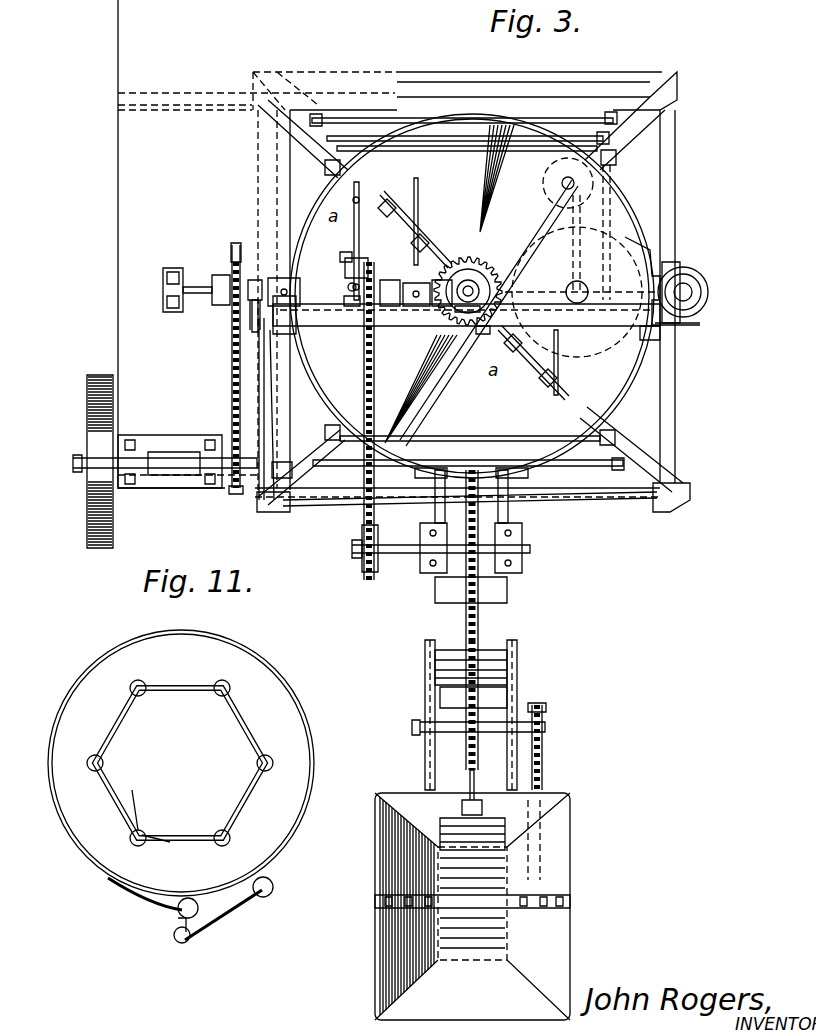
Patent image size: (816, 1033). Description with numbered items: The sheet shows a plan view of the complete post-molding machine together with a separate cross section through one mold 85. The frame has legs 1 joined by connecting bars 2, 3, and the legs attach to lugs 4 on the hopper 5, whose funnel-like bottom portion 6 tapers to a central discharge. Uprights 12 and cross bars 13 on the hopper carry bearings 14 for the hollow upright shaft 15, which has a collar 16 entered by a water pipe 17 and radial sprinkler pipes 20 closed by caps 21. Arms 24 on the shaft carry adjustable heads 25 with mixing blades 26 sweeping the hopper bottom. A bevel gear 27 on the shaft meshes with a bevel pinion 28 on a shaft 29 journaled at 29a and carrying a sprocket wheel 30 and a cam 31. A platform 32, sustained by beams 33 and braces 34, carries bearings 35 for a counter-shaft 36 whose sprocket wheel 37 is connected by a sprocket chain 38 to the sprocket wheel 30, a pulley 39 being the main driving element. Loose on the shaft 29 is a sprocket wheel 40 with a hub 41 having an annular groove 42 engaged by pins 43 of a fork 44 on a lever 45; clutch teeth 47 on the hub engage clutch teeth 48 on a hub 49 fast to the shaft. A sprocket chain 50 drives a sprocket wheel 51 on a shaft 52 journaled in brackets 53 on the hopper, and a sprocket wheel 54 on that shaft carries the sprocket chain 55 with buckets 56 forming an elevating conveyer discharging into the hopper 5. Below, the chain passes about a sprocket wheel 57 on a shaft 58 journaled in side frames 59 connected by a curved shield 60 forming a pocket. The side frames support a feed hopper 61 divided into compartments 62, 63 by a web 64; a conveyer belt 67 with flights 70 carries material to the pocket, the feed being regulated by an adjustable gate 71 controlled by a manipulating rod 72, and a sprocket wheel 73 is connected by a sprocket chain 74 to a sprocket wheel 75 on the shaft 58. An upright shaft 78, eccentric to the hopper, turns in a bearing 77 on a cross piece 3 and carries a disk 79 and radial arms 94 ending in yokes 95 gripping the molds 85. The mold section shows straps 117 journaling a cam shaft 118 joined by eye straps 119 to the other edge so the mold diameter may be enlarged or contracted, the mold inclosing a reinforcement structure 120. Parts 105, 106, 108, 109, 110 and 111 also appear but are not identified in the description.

In FIG. 3, the legs 1 is at (678, 95).
In FIG. 3, the connecting bars 2 is at (605, 175).
In FIG. 3, the connecting bars 3 is at (508, 80).
In FIG. 3, the lugs 4 is at (616, 158).
In FIG. 3, the hopper 5 is at (625, 368).
In FIG. 3, the bottom portion 6 is at (472, 296).
In FIG. 3, the uprights 12 is at (300, 316).
In FIG. 3, the cross bars 13 is at (466, 315).
In FIG. 3, the bearings 14 is at (470, 268).
In FIG. 3, the upright shaft 15 is at (464, 312).
In FIG. 3, the collar 16 is at (476, 312).
In FIG. 3, the pipe 17 is at (496, 285).
In FIG. 3, the pipes 20 is at (550, 196).
In FIG. 3, the caps 21 is at (560, 182).
In FIG. 3, the arms 24 is at (384, 192).
In FIG. 3, the heads 25 is at (418, 240).
In FIG. 3, the mixing blade 26 is at (418, 238).
In FIG. 3, the bevel gear 27 is at (530, 263).
In FIG. 3, the bevel pinion 28 is at (424, 250).
In FIG. 3, the shaft 29 is at (216, 275).
In FIG. 3, the journal 29a is at (480, 336).
In FIG. 3, the sprocket wheel 30 is at (234, 243).
In FIG. 3, the cam 31 is at (256, 278).
In FIG. 3, the platform 32 is at (117, 245).
In FIG. 3, the beams 33 is at (174, 92).
In FIG. 3, the braces 34 is at (282, 470).
In FIG. 3, the bearings 35 is at (192, 460).
In FIG. 3, the counter-shaft 36 is at (73, 462).
In FIG. 3, the sprocket wheel 37 is at (236, 494).
In FIG. 3, the sprocket chain 38 is at (232, 374).
In FIG. 3, the pulley 39 is at (92, 392).
In FIG. 3, the sprocket wheel 40 is at (373, 359).
In FIG. 3, the hub 41 is at (348, 276).
In FIG. 3, the annular groove 42 is at (300, 312).
In FIG. 3, the pins 43 is at (352, 308).
In FIG. 3, the fork 44 is at (346, 264).
In FIG. 3, the lever 45 is at (352, 196).
In FIG. 3, the clutch teeth 47 is at (390, 280).
In FIG. 3, the clutch teeth 48 is at (410, 310).
In FIG. 3, the hub 49 is at (440, 310).
In FIG. 3, the sprocket chain 50 is at (364, 518).
In FIG. 3, the sprocket wheel 51 is at (368, 574).
In FIG. 3, the shaft 52 is at (352, 548).
In FIG. 3, the brackets 53 is at (500, 480).
In FIG. 3, the sprocket wheel 54 is at (520, 510).
In FIG. 3, the sprocket chain 55 is at (480, 632).
In FIG. 3, the buckets 56 is at (436, 592).
In FIG. 3, the sprocket wheel 57 is at (465, 745).
In FIG. 3, the shaft 58 is at (420, 725).
In FIG. 3, the side frames 59 is at (425, 672).
In FIG. 3, the shield 60 is at (450, 650).
In FIG. 3, the hopper 61 is at (572, 935).
In FIG. 3, the compartment 62 is at (472, 906).
In FIG. 3, the compartment 63 is at (472, 890).
In FIG. 3, the intermediate web 64 is at (546, 910).
In FIG. 3, the conveyer belt 67 is at (474, 952).
In FIG. 3, the flights 70 is at (483, 920).
In FIG. 3, the adjustable gate 71 is at (508, 846).
In FIG. 3, the manipulating rod 72 is at (468, 802).
In FIG. 3, the sprocket wheel 73 is at (545, 842).
In FIG. 3, the sprocket chain 74 is at (543, 778).
In FIG. 3, the sprocket wheel 75 is at (546, 712).
In FIG. 3, the bearing 77 is at (581, 276).
In FIG. 3, the upright shaft 78 is at (570, 288).
In FIG. 3, the disk 79 is at (612, 246).
In FIG. 3, the mold 85 is at (710, 290).
In FIG. 11, the mold 85 is at (290, 688).
In FIG. 3, the arms 94 is at (664, 264).
In FIG. 3, the yoke 95 is at (696, 324).
In FIG. 3, the shaft 105 is at (198, 296).
In FIG. 3, the bracket 106 is at (163, 300).
In FIG. 3, the rod 108 is at (250, 324).
In FIG. 3, the rod 109 is at (258, 382).
In FIG. 3, the rod 110 is at (278, 392).
In FIG. 3, the guide 111 is at (276, 240).
In FIG. 11, the straps 117 is at (160, 906).
In FIG. 11, the cam shaft 118 is at (180, 943).
In FIG. 11, the eye straps 119 is at (226, 918).
In FIG. 11, the reinforcement structure 120 is at (244, 794).